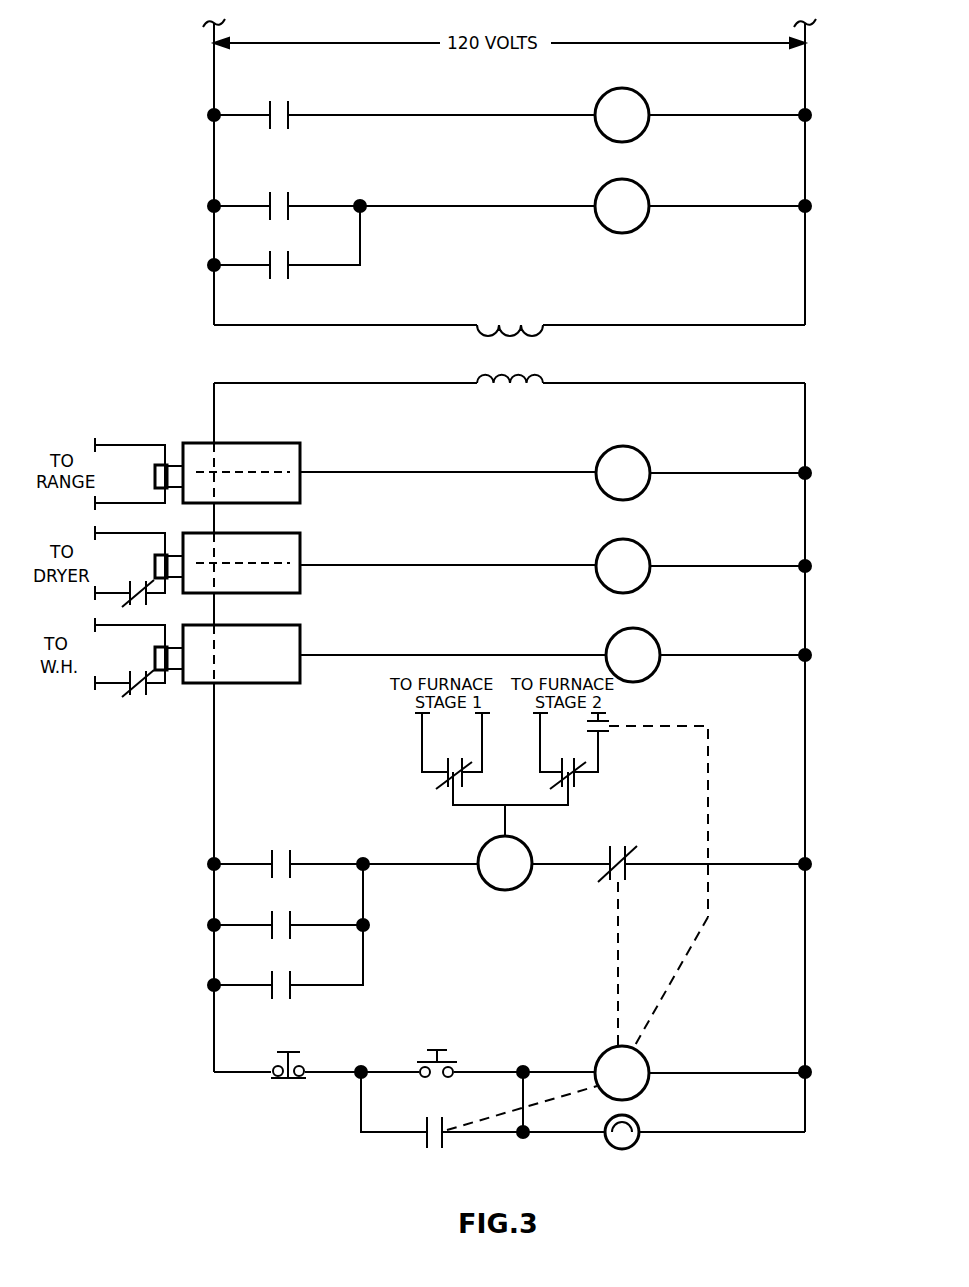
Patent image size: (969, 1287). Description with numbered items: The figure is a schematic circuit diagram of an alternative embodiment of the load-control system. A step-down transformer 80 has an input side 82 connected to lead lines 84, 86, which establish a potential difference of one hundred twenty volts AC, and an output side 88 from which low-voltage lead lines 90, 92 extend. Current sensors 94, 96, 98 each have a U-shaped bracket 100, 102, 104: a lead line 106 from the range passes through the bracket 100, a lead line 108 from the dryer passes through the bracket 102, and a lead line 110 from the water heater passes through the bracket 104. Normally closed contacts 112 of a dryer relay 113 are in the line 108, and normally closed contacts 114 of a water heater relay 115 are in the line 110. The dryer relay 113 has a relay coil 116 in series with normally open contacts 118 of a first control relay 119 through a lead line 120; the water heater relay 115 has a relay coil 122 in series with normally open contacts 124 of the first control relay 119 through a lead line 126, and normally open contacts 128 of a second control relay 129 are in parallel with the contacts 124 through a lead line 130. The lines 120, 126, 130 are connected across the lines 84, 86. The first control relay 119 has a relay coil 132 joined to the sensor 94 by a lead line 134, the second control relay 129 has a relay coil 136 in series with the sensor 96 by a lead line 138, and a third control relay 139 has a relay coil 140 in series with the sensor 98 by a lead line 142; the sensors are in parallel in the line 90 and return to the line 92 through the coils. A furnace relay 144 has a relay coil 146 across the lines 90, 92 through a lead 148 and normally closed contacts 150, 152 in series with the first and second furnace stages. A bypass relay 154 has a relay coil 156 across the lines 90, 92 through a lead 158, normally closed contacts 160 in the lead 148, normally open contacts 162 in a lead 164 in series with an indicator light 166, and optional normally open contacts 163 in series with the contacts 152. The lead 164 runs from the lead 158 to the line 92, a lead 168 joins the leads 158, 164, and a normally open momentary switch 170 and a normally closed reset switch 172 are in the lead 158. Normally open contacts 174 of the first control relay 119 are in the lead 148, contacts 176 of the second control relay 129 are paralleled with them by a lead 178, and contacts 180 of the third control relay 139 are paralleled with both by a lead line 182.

The step-down transformer 80 is at (474, 400).
The input side 82 is at (506, 325).
The lead line 84 is at (214, 160).
The lead line 86 is at (805, 150).
The output side 88 is at (510, 390).
The lead line 90 is at (214, 762).
The lead line 92 is at (805, 768).
The current sensor 94 is at (267, 443).
The current sensor 96 is at (280, 533).
The current sensor 98 is at (288, 625).
The U-shaped bracket 100 is at (155, 478).
The U-shaped bracket 102 is at (155, 568).
The U-shaped bracket 104 is at (155, 658).
The lead line 106 is at (131, 443).
The lead line 108 is at (145, 542).
The lead line 110 is at (119, 624).
The normally closed contacts 112 is at (150, 600).
The dryer relay 113 is at (638, 85).
The normally closed contacts 114 is at (147, 690).
The water heater relay 115 is at (638, 178).
The relay coil 116 is at (700, 115).
The normally open contacts 118 is at (293, 111).
The first control relay 119 is at (644, 443).
The lead line 120 is at (430, 115).
The relay coil 122 is at (700, 206).
The normally open contacts 124 is at (292, 202).
The lead line 126 is at (428, 206).
The normally open contacts 128 is at (292, 262).
The second control relay 129 is at (645, 539).
The lead line 130 is at (360, 232).
The relay coil 132 is at (703, 473).
The lead line 134 is at (430, 473).
The relay coil 136 is at (703, 566).
The lead line 138 is at (448, 551).
The third control relay 139 is at (645, 633).
The relay coil 140 is at (708, 664).
The lead line 142 is at (418, 655).
The furnace relay 144 is at (538, 849).
The relay coil 146 is at (493, 892).
The lead 148 is at (402, 863).
The normally closed relay contacts 150 is at (466, 766).
The normally closed relay contacts 152 is at (588, 770).
The bypass relay 154 is at (651, 1023).
The relay coil 156 is at (700, 1073).
The lead 158 is at (505, 1071).
The normally closed contacts 160 is at (632, 856).
The normally open contacts 162 is at (424, 1141).
The normally open contacts 163 is at (620, 726).
The lead 164 is at (579, 1134).
The indicator light 166 is at (634, 1148).
The lead 168 is at (520, 1094).
The momentary contact switch 170 is at (438, 1033).
The reset switch 172 is at (308, 1047).
The normally open contacts 174 is at (293, 852).
The normally open contacts 176 is at (293, 915).
The lead 178 is at (305, 927).
The normally open contacts 180 is at (294, 985).
The lead line 182 is at (333, 986).